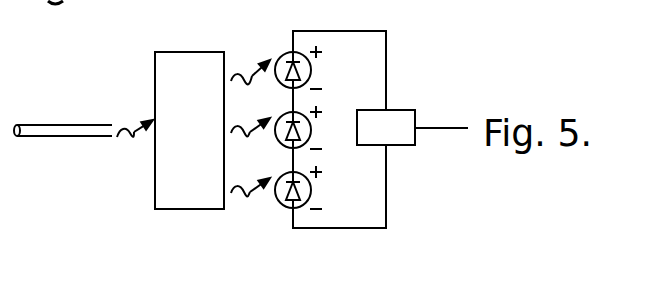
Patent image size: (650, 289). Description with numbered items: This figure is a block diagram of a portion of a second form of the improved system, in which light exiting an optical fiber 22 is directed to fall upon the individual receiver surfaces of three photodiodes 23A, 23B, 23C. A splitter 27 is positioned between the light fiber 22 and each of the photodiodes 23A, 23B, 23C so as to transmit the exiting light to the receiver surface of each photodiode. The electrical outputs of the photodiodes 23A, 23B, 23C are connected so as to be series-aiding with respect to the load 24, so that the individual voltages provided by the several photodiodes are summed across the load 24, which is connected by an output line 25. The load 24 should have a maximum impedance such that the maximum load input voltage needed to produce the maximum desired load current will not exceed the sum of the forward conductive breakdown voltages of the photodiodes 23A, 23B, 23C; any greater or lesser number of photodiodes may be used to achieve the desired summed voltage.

The optical fiber 22 is at (84, 124).
The splitter 27 is at (196, 52).
The photodiode 23A is at (311, 68).
The photodiode 23B is at (311, 128).
The photodiode 23C is at (311, 189).
The load 24 is at (398, 110).
The output line 25 is at (432, 128).